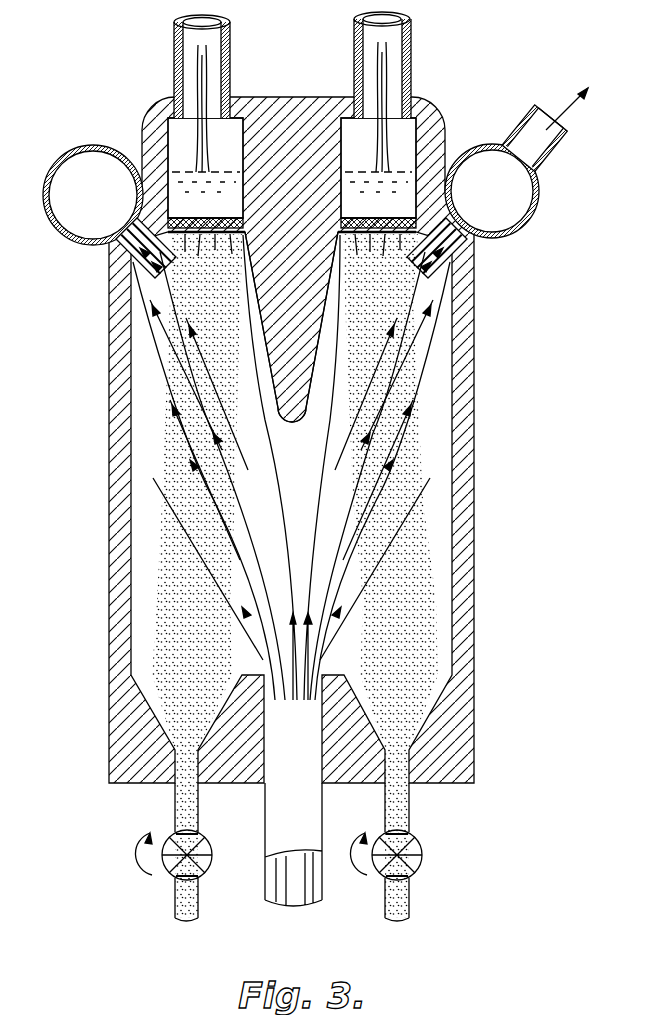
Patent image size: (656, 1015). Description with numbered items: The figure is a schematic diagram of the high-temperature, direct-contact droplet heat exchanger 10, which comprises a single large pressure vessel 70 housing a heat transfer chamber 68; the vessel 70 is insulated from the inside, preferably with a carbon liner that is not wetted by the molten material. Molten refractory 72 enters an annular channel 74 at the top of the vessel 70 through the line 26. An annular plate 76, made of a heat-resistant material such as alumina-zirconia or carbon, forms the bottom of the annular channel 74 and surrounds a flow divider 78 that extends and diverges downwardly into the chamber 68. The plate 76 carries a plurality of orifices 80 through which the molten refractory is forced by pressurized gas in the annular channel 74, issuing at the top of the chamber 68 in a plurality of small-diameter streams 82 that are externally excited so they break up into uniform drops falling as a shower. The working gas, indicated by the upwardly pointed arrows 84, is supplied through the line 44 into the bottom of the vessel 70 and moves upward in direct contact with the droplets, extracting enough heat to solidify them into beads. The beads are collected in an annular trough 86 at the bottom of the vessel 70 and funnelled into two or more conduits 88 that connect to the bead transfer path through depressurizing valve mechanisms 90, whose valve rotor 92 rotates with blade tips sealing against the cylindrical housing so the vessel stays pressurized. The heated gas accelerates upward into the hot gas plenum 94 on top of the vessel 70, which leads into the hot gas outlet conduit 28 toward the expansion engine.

The direct-contact heat exchanger 10 is at (316, 468).
The line 26 is at (352, 27).
The hot gas outlet conduit 28 is at (568, 150).
The line 44 is at (265, 855).
The heat transfer chamber 68 is at (432, 462).
The pressure vessel 70 is at (109, 430).
The molten refractory 72 is at (177, 138).
The annular channel 74 is at (200, 125).
The annular plate 76 is at (445, 142).
The flow divider 78 is at (274, 380).
The orifices 80 is at (222, 214).
The streams 82 is at (135, 275).
The upwardly pointed arrows 84 is at (197, 555).
The annular trough 86 is at (138, 690).
The conduits 88 is at (175, 800).
The depressurizing valve mechanisms 90 is at (165, 865).
The valve rotor 92 is at (185, 865).
The hot gas plenum 94 is at (60, 158).